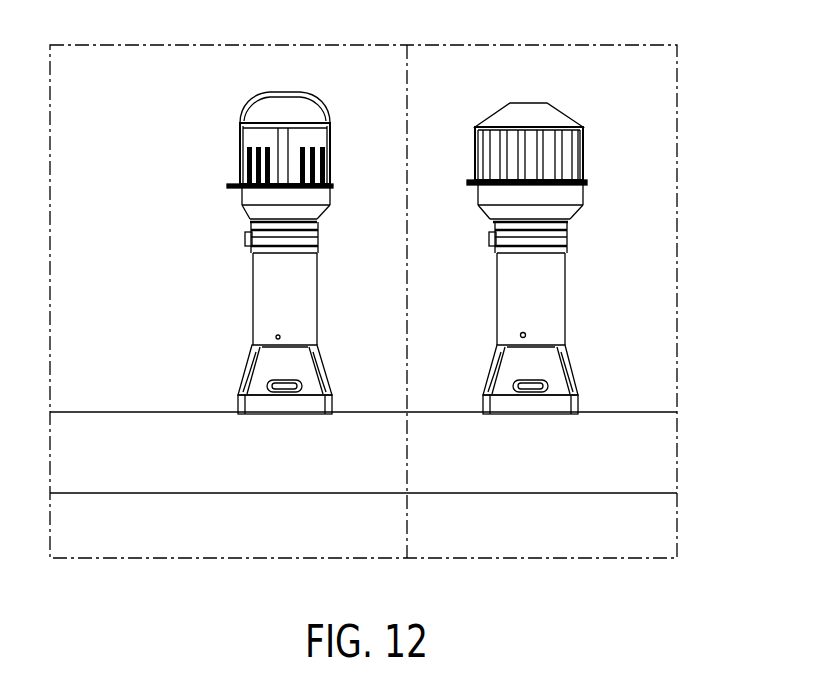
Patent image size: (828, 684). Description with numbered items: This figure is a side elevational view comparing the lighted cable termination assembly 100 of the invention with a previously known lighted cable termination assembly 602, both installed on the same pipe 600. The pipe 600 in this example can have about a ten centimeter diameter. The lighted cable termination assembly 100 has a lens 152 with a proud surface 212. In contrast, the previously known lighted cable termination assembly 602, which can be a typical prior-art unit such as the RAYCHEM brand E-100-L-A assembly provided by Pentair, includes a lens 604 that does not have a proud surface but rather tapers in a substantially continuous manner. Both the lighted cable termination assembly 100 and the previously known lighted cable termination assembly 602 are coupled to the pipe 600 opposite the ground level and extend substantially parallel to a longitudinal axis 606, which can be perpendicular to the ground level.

The lighted cable termination assembly 100 is at (249, 239).
The lens 152 is at (258, 97).
The proud surface 212 is at (240, 126).
The pipe 600 is at (640, 468).
The previously known lighted cable termination assembly 602 is at (553, 251).
The lens 604 is at (558, 118).
The longitudinal axis 606 is at (408, 128).